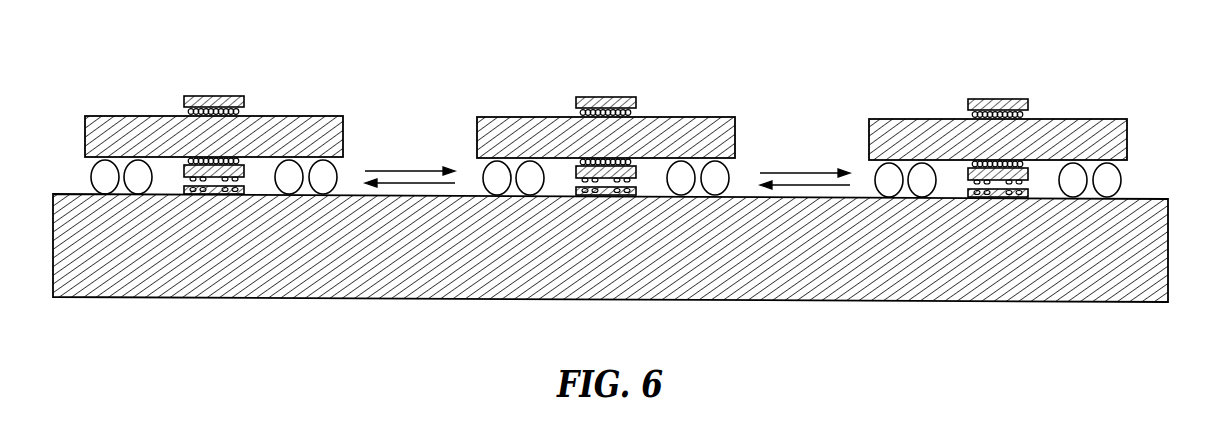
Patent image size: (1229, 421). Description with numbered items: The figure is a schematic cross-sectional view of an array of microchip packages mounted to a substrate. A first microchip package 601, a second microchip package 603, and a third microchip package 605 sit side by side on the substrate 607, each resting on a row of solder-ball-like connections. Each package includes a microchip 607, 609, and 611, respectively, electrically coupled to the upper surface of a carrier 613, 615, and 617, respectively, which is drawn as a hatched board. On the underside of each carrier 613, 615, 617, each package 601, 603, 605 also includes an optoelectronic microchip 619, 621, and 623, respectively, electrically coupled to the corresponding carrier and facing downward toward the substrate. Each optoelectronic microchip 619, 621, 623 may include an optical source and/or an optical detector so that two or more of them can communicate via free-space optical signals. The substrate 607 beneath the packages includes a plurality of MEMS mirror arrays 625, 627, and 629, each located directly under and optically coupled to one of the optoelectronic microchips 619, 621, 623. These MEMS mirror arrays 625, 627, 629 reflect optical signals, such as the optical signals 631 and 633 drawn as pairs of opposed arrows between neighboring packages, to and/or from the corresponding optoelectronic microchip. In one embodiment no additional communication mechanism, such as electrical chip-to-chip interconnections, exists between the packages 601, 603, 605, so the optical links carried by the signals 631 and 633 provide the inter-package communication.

The first microchip package 601 is at (249, 178).
The second microchip package 603 is at (643, 183).
The third microchip package 605 is at (1035, 189).
The microchip 607 is at (835, 302).
The microchip 609 is at (597, 96).
The microchip 611 is at (1000, 98).
The carrier 613 is at (343, 140).
The carrier 615 is at (735, 141).
The carrier 617 is at (1127, 142).
The optoelectronic microchip 619 is at (244, 172).
The optoelectronic microchip 621 is at (636, 173).
The optoelectronic microchip 623 is at (1028, 178).
The MEMS mirror array 625 is at (211, 196).
The MEMS mirror array 627 is at (602, 197).
The MEMS mirror array 629 is at (995, 199).
The optical signal 631 is at (416, 157).
The optical signal 633 is at (816, 158).